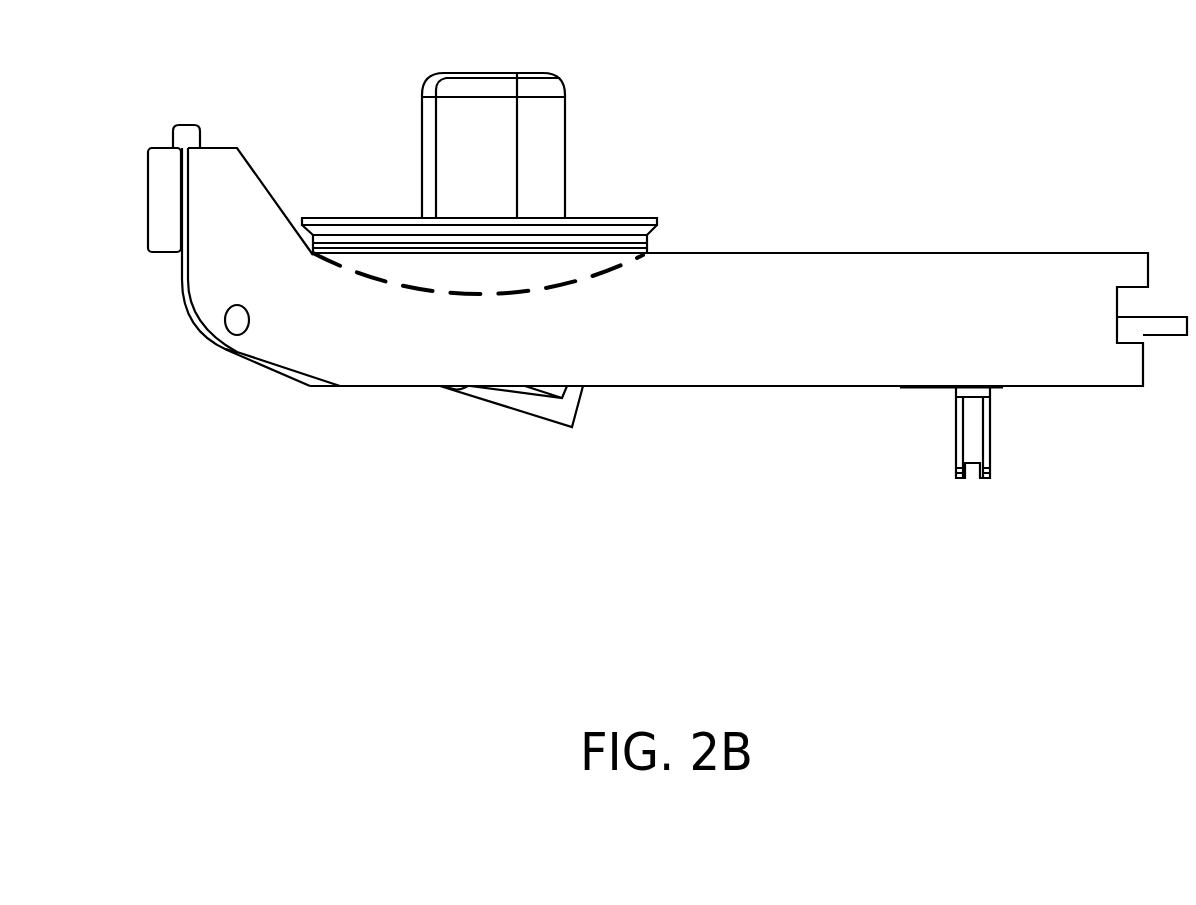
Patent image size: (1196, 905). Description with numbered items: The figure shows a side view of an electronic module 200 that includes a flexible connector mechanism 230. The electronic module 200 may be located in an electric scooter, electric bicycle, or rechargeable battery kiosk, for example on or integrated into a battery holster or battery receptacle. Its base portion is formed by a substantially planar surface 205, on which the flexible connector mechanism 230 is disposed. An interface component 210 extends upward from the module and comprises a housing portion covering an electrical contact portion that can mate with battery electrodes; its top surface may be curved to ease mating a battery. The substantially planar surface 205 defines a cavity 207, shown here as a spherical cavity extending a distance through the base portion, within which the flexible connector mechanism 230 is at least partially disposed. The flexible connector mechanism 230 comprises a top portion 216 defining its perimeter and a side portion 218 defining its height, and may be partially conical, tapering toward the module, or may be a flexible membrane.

The electronic module 200 is at (719, 455).
The substantially planar surface 205 is at (1091, 252).
The cavity 207 is at (430, 297).
The interface component 210 is at (565, 115).
The top portion 216 is at (382, 217).
The side portion 218 is at (647, 240).
The flexible connector mechanism 230 is at (593, 218).